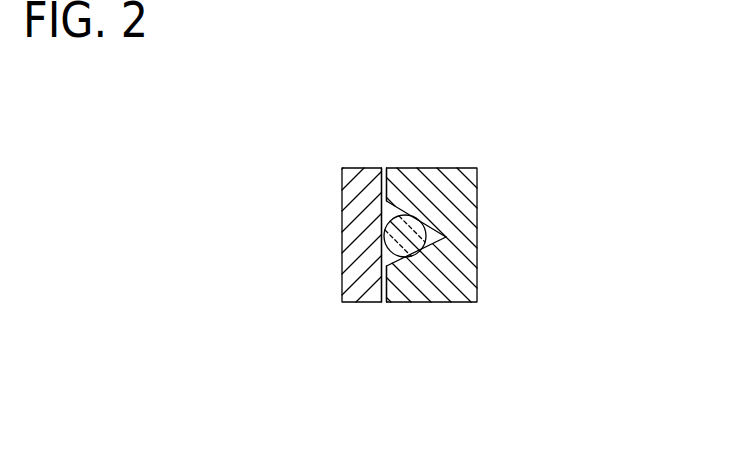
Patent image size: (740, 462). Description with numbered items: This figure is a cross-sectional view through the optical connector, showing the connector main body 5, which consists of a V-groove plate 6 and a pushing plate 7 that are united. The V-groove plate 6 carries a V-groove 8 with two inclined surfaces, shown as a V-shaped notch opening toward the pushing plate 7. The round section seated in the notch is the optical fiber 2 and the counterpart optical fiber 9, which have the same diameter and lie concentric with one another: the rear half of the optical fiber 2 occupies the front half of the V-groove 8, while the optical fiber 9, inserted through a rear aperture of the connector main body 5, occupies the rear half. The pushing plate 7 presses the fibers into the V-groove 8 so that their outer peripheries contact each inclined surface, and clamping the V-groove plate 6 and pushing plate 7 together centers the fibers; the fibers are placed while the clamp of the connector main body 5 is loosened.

The optical fiber 2 is at (433, 177).
The optical fiber 9 is at (410, 232).
The connector main body 5 is at (412, 262).
The V-groove plate 6 is at (430, 297).
The pushing plate 7 is at (361, 297).
The V-groove 8 is at (384, 212).